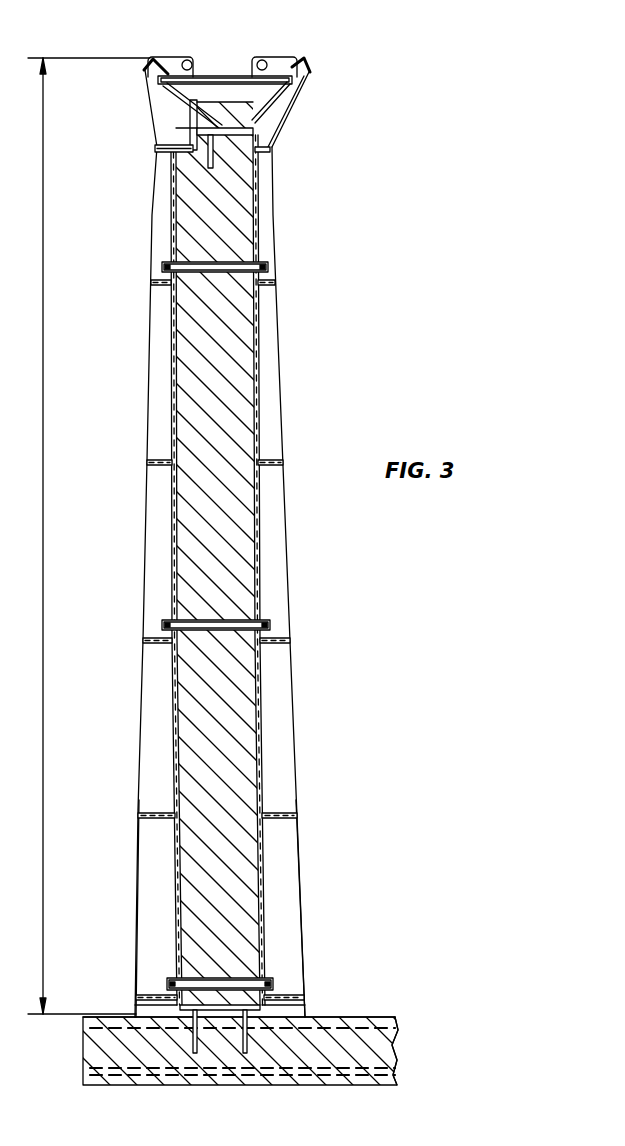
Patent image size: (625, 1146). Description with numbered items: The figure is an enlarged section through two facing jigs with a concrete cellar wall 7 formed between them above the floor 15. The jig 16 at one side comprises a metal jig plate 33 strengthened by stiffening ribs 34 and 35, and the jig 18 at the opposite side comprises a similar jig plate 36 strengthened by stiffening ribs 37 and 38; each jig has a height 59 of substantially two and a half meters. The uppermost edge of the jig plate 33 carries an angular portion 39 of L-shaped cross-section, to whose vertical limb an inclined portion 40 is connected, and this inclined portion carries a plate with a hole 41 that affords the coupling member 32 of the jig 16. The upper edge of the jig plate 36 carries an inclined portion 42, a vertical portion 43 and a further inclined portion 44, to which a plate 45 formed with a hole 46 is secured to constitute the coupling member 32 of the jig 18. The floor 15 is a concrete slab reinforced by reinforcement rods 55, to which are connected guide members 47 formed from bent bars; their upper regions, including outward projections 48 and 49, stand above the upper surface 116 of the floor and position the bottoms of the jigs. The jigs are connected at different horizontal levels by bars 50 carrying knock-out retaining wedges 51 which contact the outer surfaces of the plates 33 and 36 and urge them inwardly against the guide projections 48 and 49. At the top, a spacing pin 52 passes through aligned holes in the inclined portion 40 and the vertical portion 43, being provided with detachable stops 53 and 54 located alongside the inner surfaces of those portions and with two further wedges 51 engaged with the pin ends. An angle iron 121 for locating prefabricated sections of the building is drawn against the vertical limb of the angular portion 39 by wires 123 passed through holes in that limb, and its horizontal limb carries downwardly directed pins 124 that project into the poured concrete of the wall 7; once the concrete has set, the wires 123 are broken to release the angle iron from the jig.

The wall 7 is at (243, 521).
The floor 15 is at (84, 1050).
The jig 16 is at (148, 315).
The jig 18 is at (281, 385).
The coupling member 32 is at (170, 57).
The jig plate 33 is at (171, 361).
The stiffening rib 34 is at (142, 813).
The stiffening rib 35 is at (138, 873).
The jig plate 36 is at (260, 723).
The stiffening rib 37 is at (293, 813).
The stiffening rib 38 is at (290, 860).
The angular portion 39 is at (160, 144).
The inclined portion 40 is at (150, 72).
The hole 41 is at (193, 62).
The inclined portion 42 is at (274, 116).
The vertical portion 43 is at (293, 92).
The inclined portion 44 is at (290, 58).
The plate 45 is at (280, 54).
The hole 46 is at (262, 60).
The guide member 47 is at (227, 1000).
The outward projection 48 is at (140, 1011).
The outward projection 49 is at (290, 1011).
The bar 50 is at (270, 266).
The knock-out retaining wedge 51 is at (160, 83).
The spacing pin 52 is at (225, 67).
The detachable stop 53 is at (190, 115).
The detachable stop 54 is at (226, 122).
The reinforcement rod 55 is at (393, 1045).
The height 59 is at (89, 536).
The upper surface 116 is at (388, 1013).
The angle iron 121 is at (268, 98).
The wire 123 is at (190, 127).
The pin 124 is at (213, 163).